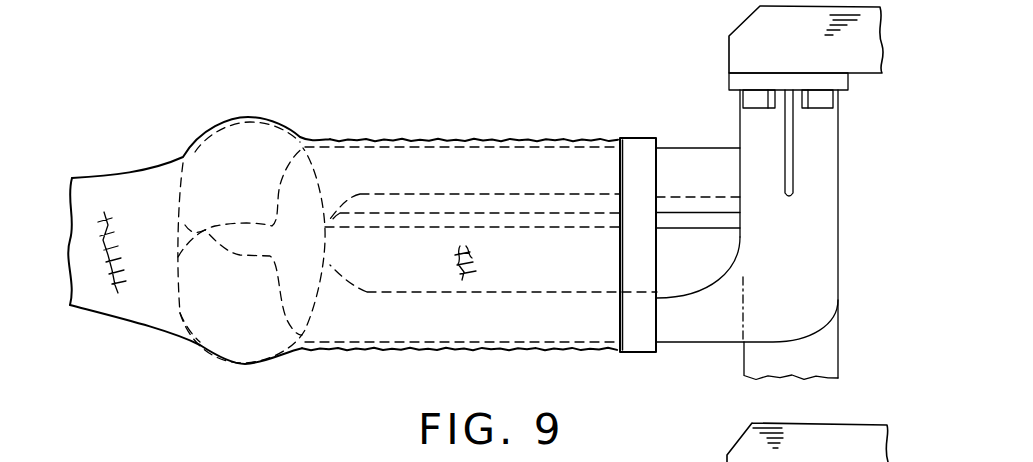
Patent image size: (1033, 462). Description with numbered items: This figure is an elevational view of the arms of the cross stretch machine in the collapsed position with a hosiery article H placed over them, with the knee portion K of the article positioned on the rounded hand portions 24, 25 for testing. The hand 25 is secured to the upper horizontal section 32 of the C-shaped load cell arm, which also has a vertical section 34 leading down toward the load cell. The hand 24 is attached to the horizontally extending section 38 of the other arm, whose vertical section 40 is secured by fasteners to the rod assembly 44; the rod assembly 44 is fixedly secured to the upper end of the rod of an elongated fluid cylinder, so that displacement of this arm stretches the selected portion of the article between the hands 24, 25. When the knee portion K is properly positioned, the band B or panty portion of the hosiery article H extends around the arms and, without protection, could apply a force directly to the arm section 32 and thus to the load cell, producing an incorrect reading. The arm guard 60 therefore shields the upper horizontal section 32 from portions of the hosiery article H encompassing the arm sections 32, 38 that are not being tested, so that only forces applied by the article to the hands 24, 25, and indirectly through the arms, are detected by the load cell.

The knee portion K is at (245, 117).
The rounded hand portion 24 is at (213, 180).
The rounded hand portion 25 is at (213, 302).
The upper horizontal section 32 is at (386, 167).
The hosiery article H is at (408, 138).
The arm guard 60 is at (490, 229).
The horizontally extending section 38 is at (397, 318).
The band B is at (637, 352).
The vertical section 40 is at (807, 227).
The rod assembly 44 is at (762, 33).
The vertical section 34 is at (822, 352).